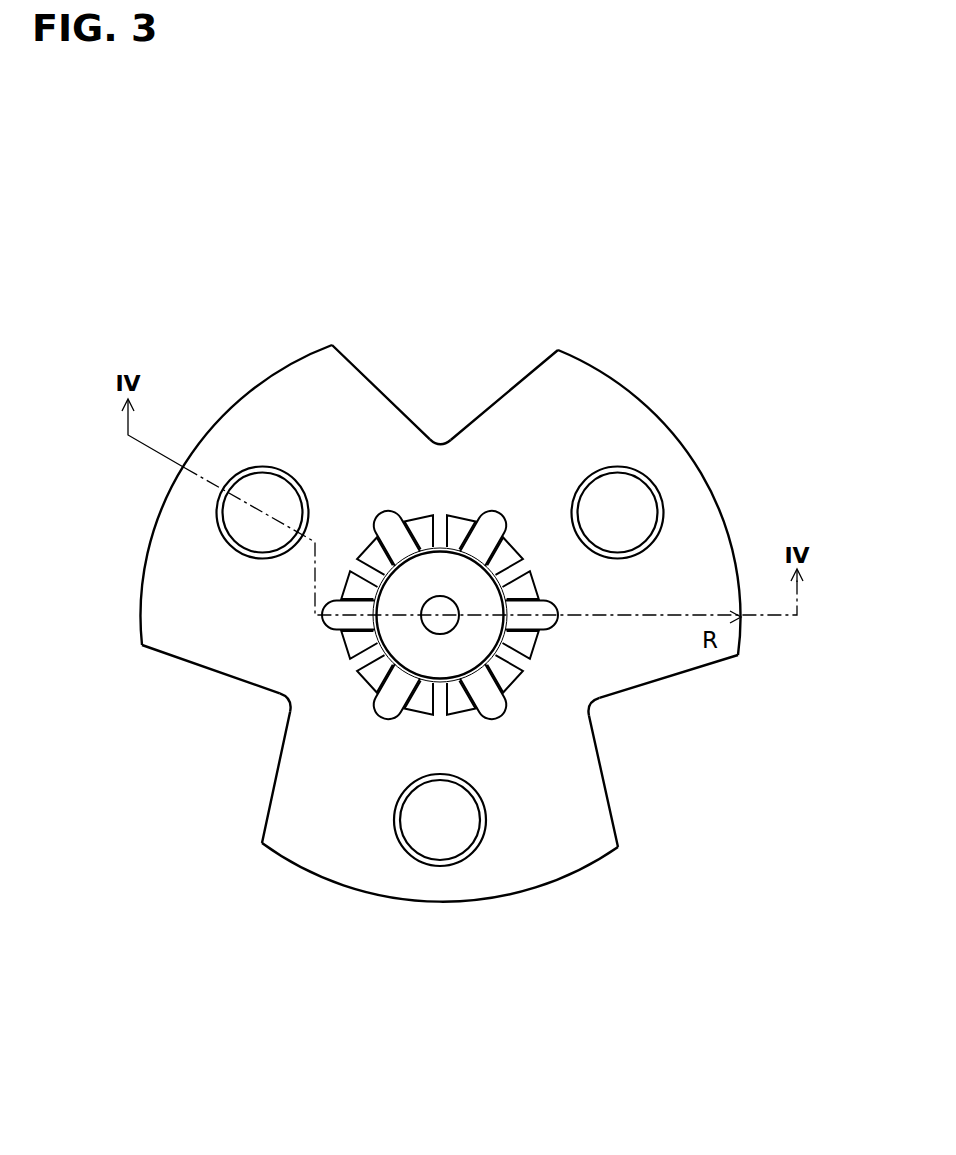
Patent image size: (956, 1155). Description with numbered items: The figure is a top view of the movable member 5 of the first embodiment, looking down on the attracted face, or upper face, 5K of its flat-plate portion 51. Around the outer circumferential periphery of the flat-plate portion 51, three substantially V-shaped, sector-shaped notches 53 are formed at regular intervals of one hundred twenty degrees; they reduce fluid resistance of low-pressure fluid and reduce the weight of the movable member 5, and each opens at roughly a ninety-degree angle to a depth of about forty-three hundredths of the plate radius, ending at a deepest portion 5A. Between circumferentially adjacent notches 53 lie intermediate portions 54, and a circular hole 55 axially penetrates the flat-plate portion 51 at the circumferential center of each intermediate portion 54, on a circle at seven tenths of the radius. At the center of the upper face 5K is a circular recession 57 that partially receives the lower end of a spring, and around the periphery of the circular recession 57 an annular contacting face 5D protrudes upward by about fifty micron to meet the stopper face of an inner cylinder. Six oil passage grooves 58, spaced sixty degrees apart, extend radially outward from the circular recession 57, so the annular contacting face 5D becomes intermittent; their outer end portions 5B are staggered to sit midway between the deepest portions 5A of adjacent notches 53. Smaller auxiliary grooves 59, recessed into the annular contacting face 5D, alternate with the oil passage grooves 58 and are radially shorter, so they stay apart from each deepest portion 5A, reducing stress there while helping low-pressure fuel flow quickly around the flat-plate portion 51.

The movable member 5 is at (459, 627).
The deepest portion 5A is at (444, 433).
The outer end portion 5B is at (382, 517).
The annular contacting face 5D is at (440, 600).
The attracted face 5K is at (313, 815).
The flat-plate portion 51 is at (459, 636).
The notch 53 is at (353, 364).
The intermediate portion 54 is at (266, 398).
The circular hole 55 is at (226, 535).
The circular recession 57 is at (487, 573).
The oil passage groove 58 is at (401, 530).
The auxiliary groove 59 is at (443, 527).